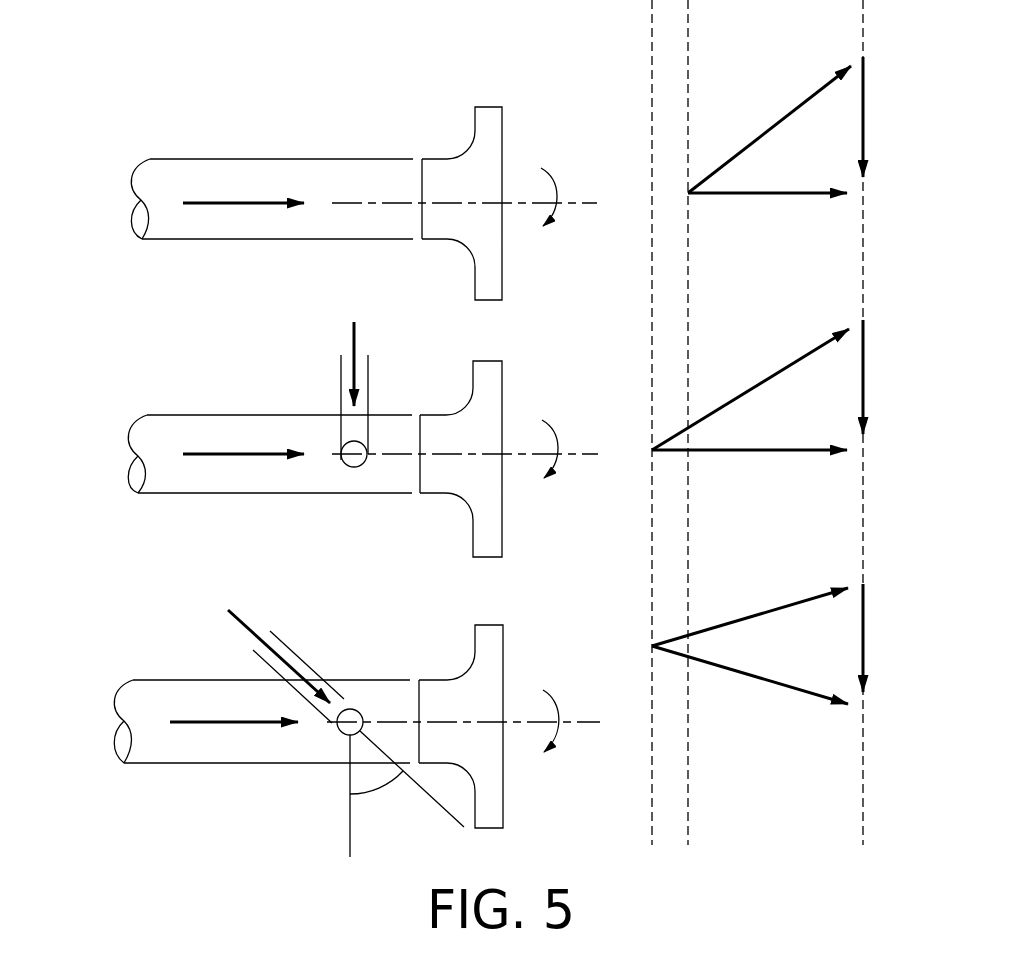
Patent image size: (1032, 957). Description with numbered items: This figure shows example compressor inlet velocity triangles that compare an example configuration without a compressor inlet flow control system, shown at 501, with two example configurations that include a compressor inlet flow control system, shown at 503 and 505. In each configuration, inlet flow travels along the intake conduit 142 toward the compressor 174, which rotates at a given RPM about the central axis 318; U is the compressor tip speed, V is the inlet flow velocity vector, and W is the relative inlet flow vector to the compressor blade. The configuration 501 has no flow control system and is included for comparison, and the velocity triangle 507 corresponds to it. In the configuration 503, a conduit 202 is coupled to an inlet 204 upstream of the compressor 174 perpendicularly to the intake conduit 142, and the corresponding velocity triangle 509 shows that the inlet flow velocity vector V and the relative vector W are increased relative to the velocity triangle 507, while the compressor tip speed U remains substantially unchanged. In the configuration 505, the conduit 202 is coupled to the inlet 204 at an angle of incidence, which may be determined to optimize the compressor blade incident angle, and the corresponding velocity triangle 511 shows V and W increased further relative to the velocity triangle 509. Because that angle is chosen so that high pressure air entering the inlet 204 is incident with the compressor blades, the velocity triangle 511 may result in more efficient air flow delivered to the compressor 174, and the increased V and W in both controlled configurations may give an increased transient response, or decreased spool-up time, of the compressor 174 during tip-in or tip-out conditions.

The configuration without a compressor inlet flow control system 501 is at (142, 121).
The configuration with perpendicular compressor inlet flow control system 503 is at (157, 387).
The configuration with angled compressor inlet flow control system 505 is at (147, 649).
The intake conduit 142 is at (198, 240).
The compressor 174 is at (503, 128).
The central axis 318 is at (570, 206).
The conduit 202 is at (341, 375).
The inlet 204 is at (356, 468).
The velocity triangle 507 is at (786, 64).
The velocity triangle 509 is at (781, 321).
The velocity triangle 511 is at (811, 584).